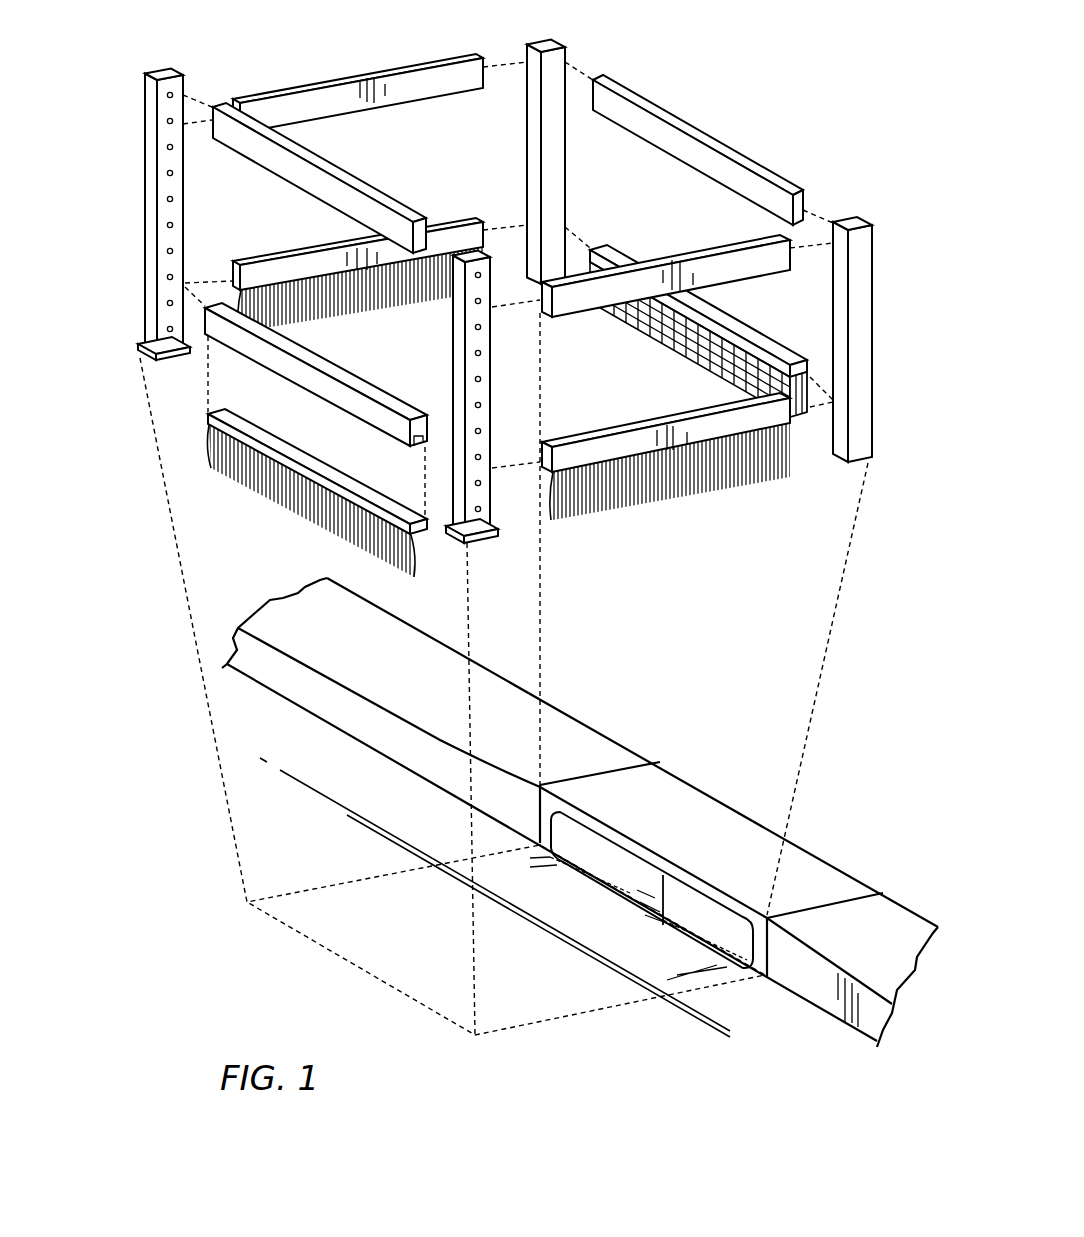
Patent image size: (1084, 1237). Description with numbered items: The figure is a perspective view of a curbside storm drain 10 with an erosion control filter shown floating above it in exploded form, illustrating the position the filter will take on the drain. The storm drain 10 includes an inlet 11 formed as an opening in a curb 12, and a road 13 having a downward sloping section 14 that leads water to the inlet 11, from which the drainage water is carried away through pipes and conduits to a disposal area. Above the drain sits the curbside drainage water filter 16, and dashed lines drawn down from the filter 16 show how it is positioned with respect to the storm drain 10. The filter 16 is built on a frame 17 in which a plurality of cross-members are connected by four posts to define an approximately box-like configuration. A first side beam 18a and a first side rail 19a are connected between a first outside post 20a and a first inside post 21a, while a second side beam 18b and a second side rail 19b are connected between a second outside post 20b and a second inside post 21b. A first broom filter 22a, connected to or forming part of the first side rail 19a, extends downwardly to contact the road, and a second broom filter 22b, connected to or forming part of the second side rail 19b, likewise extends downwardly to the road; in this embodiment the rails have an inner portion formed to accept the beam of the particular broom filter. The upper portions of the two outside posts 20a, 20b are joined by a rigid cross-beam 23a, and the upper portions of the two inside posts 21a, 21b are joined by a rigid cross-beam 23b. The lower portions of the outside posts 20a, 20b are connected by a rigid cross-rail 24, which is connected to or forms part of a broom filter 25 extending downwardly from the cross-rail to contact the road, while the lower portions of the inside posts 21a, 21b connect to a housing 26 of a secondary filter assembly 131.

The curbside storm drain 10 is at (832, 828).
The inlet 11 is at (600, 862).
The curb 12 is at (362, 716).
The road 13 is at (317, 847).
The downward sloping section 14 is at (590, 922).
The curbside drainage water filter 16 is at (742, 145).
The frame 17 is at (423, 47).
The first side beam 18a is at (325, 80).
The second side beam 18b is at (743, 243).
The first side rail 19a is at (300, 252).
The second side rail 19b is at (667, 420).
The first outside post 20a is at (152, 182).
The second outside post 20b is at (486, 367).
The first inside post 21a is at (546, 42).
The second inside post 21b is at (850, 222).
The first broom filter 22a is at (330, 312).
The second broom filter 22b is at (650, 490).
The rigid cross-beam 23a is at (332, 170).
The rigid cross-beam 23b is at (640, 100).
The rigid cross-rail 24 is at (340, 393).
The broom filter 25 is at (302, 508).
The housing 26 is at (689, 331).
The secondary filter assembly 131 is at (646, 346).